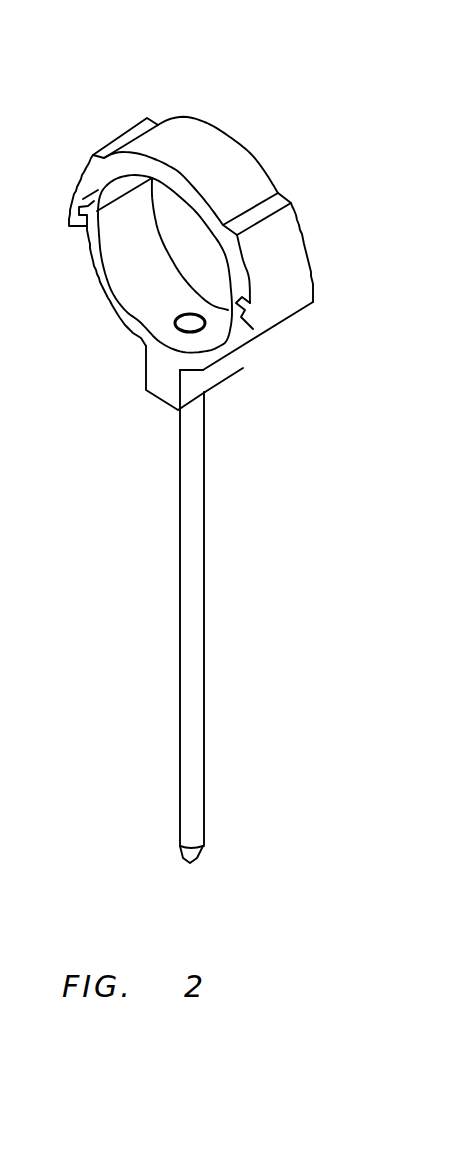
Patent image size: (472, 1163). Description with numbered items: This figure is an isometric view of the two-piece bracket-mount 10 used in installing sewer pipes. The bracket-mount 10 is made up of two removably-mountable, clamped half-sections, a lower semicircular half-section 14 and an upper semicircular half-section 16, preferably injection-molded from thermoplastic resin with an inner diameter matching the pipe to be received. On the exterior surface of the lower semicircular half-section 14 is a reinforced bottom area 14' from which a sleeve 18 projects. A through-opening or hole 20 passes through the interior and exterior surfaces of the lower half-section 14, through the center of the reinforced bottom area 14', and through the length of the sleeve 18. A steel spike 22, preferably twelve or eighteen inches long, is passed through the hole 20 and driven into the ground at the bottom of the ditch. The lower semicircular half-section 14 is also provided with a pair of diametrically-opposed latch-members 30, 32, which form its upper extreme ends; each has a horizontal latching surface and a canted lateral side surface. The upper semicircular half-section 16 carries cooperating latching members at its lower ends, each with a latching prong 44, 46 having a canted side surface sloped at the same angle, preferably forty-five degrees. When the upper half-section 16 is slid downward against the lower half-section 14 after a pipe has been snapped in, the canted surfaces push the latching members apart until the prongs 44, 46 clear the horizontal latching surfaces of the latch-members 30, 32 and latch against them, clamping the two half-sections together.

The two-piece bracket-mount 10 is at (232, 125).
The lower semicircular half-section 14 is at (175, 256).
The reinforced bottom area 14' is at (132, 410).
The upper semicircular half-section 16 is at (298, 214).
The sleeve 18 is at (152, 393).
The through-opening 20 is at (190, 325).
The steel spike 22 is at (199, 553).
The latch-member 30 is at (80, 210).
The latch-member 32 is at (238, 299).
The latching prong 44 is at (72, 222).
The latching prong 46 is at (253, 329).